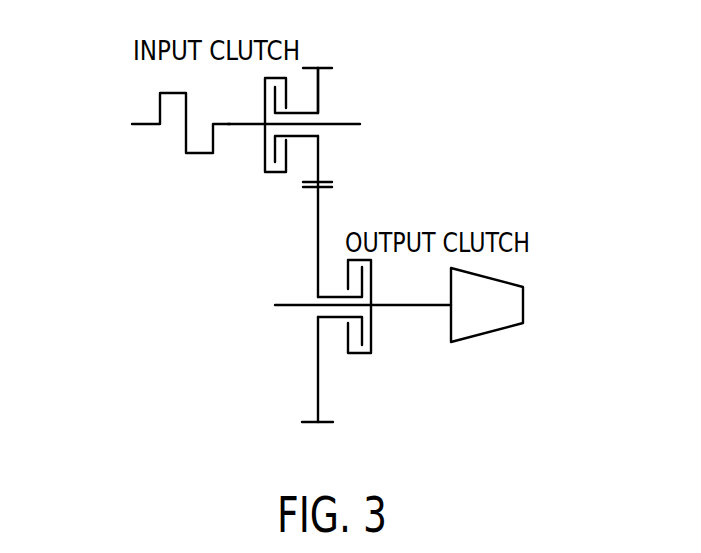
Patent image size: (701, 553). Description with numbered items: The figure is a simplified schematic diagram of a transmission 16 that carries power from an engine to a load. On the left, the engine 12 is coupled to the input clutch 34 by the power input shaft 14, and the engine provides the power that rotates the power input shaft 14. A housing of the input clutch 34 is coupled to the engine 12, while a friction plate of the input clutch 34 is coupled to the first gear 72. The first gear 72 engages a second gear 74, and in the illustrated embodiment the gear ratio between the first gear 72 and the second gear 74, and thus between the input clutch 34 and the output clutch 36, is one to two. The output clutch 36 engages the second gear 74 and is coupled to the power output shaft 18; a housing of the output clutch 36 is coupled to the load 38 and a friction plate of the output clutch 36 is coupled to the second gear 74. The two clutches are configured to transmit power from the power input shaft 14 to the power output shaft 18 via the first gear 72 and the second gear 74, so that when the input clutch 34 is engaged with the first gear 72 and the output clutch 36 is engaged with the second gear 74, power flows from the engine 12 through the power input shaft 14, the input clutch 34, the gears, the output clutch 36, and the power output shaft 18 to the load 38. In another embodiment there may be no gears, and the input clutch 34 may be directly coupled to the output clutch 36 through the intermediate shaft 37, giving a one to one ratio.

The engine 12 is at (145, 101).
The power input shaft 14 is at (241, 143).
The transmission 16 is at (323, 45).
The first gear 72 is at (337, 103).
The input clutch 34 is at (272, 190).
The intermediate shaft 37 is at (368, 200).
The second gear 74 is at (292, 282).
The output clutch 36 is at (365, 358).
The power output shaft 18 is at (413, 317).
The load 38 is at (482, 335).